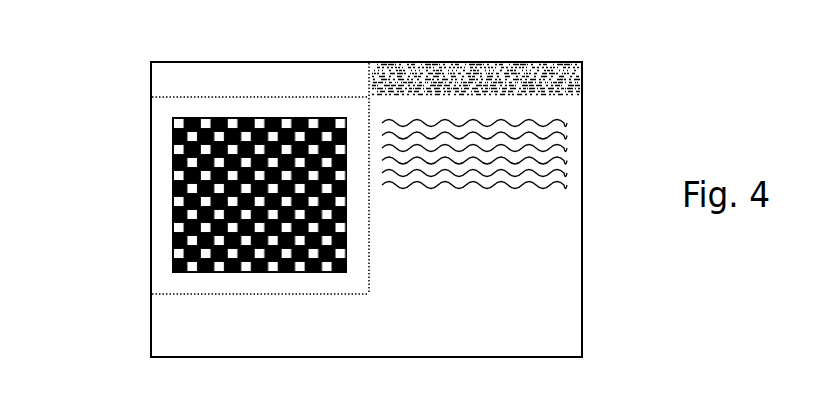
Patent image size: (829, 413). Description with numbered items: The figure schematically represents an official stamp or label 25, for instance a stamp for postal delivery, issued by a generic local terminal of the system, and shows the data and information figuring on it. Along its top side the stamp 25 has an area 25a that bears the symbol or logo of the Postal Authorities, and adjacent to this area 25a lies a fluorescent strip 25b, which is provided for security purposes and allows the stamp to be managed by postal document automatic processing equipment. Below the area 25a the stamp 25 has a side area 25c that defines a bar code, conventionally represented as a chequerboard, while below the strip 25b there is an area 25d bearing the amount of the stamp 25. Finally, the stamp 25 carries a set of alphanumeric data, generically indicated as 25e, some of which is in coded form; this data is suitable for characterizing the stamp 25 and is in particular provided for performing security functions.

The official stamp 25 is at (98, 325).
The area bearing the symbol or logo of the Postal Authorities 25a is at (157, 74).
The fluorescent strip 25b is at (583, 81).
The side area defining a bar code 25c is at (169, 190).
The area bearing the amount of the stamp 25d is at (585, 117).
The set of alphanumeric data 25e is at (592, 228).